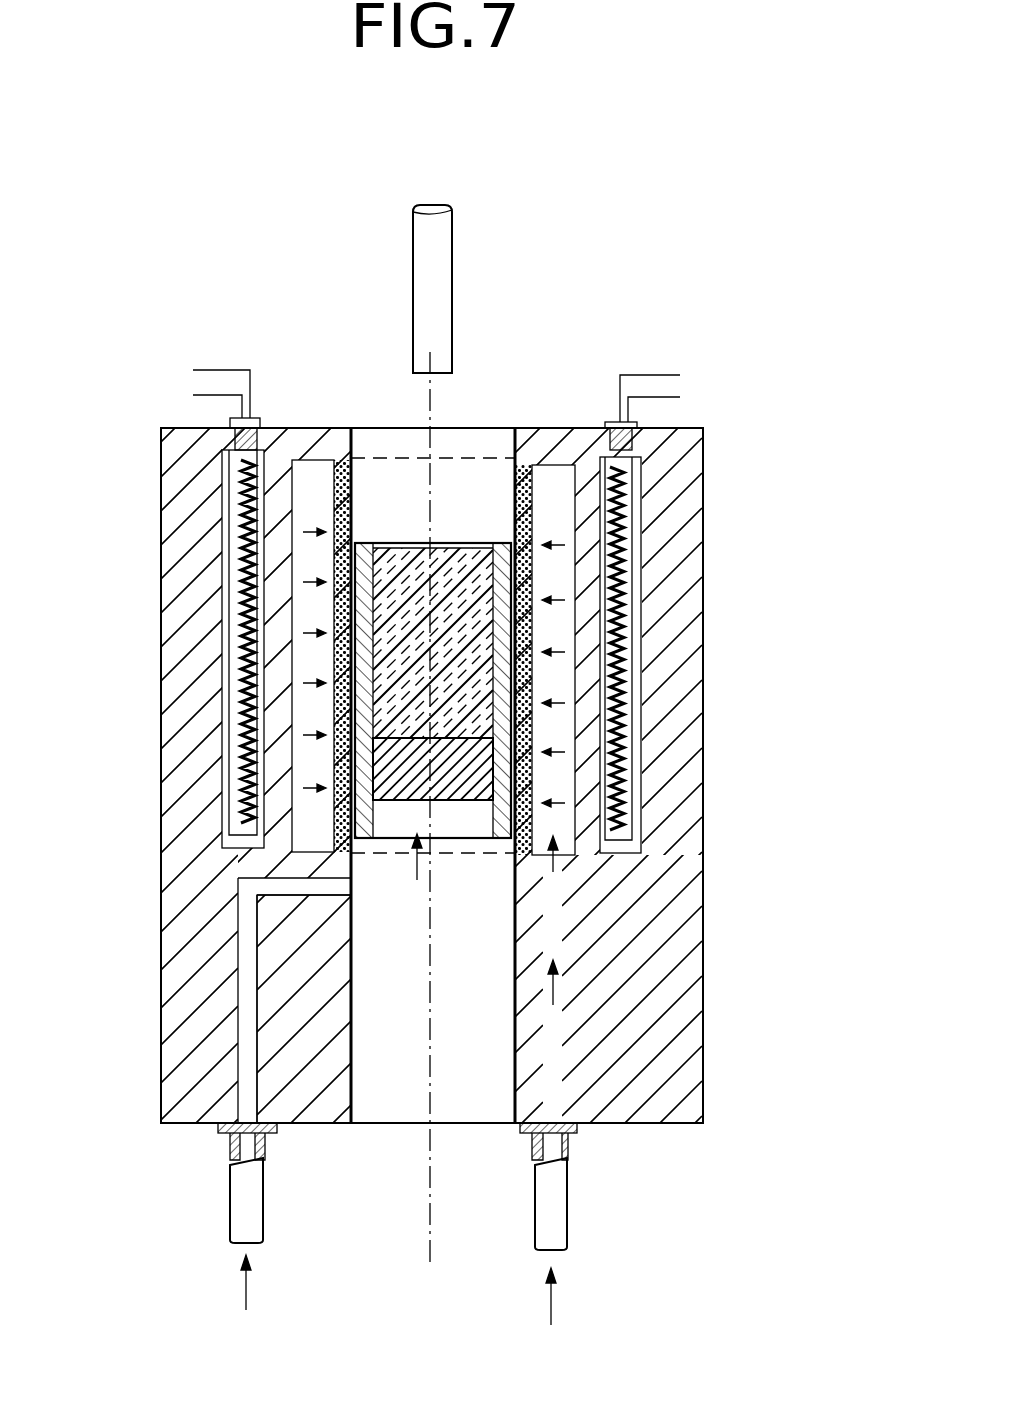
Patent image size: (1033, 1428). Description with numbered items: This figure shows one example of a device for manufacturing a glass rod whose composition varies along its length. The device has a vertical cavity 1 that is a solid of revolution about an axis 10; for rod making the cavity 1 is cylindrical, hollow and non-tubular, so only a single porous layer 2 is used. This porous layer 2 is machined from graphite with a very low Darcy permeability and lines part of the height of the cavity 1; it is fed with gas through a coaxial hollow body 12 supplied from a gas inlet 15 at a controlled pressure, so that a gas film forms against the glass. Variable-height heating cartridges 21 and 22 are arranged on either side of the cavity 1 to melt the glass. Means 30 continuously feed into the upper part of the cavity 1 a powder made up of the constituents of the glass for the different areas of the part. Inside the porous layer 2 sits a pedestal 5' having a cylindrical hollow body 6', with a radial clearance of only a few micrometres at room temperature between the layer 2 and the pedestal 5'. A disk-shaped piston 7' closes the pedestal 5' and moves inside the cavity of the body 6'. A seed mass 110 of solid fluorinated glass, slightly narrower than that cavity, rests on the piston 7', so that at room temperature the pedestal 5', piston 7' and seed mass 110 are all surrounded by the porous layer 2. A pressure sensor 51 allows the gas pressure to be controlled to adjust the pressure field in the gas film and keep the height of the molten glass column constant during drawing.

The cavity 1 is at (470, 500).
The porous layer 2 is at (353, 483).
The hollow body 12 is at (310, 480).
The heating cartridge 21 is at (243, 652).
The heating cartridge 22 is at (633, 610).
The powder feeding means 30 is at (425, 295).
The seed mass 110 is at (404, 575).
The piston 7' is at (433, 767).
The body of the pedestal 6' is at (433, 724).
The pedestal 5' is at (414, 894).
The axis 10 is at (430, 1210).
The pressure sensor 51 is at (255, 1213).
The gas inlet 15 is at (566, 1216).